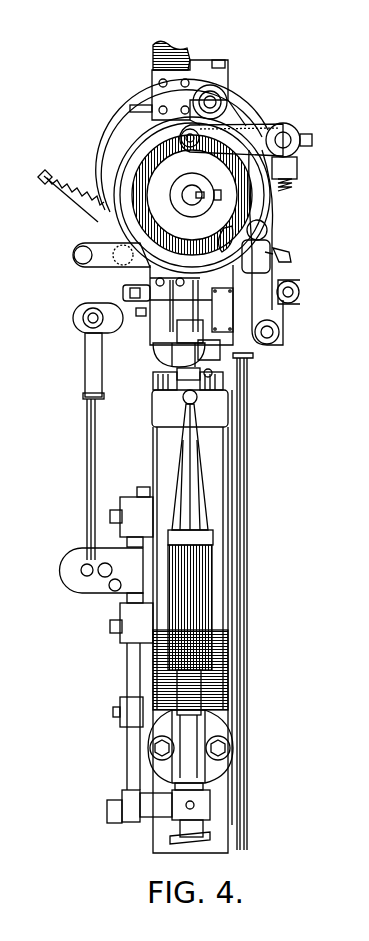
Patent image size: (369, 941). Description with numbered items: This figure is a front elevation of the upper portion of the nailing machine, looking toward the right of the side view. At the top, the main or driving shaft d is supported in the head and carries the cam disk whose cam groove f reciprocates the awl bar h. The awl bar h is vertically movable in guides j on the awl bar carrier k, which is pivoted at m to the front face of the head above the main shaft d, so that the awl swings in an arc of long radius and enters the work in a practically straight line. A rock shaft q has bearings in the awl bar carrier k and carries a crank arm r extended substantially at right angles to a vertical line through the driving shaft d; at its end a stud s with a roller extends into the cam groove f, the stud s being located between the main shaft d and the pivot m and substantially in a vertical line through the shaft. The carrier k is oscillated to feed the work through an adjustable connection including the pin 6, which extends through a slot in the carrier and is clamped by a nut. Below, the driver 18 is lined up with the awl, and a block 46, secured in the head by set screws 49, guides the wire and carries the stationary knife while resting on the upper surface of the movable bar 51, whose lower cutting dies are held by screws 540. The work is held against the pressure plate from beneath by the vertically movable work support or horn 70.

The pivot m is at (197, 105).
The cam groove f is at (143, 163).
The main or driving shaft d is at (205, 203).
The stud s is at (187, 144).
The crank arm r is at (268, 130).
The rock shaft q is at (286, 138).
The awl bar carrier k is at (270, 215).
The stud or pin 6 is at (273, 242).
The guides j is at (257, 293).
The driver 18 is at (183, 315).
The set screws 49 is at (120, 337).
The block 46 is at (180, 330).
The screws 540 is at (187, 356).
The movable bar 51 is at (181, 374).
The awl bar h is at (233, 360).
The work support or horn 70 is at (186, 455).